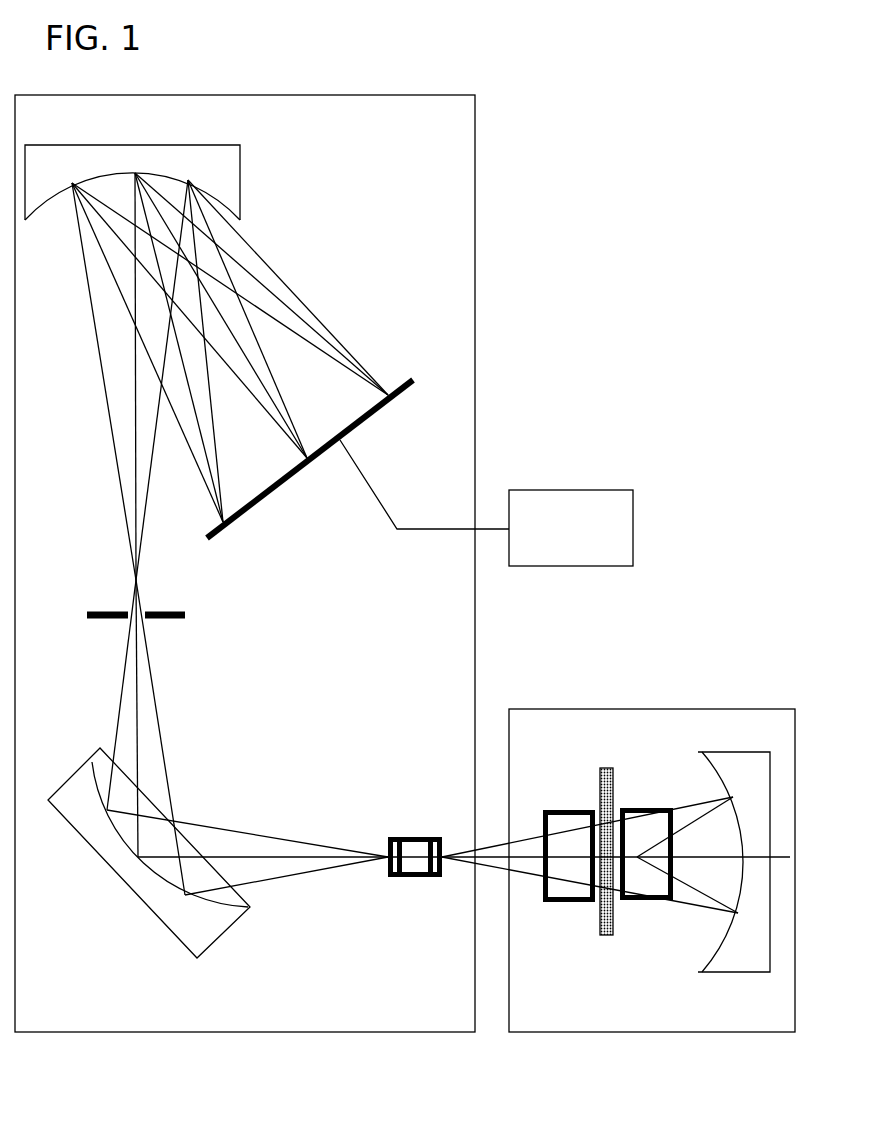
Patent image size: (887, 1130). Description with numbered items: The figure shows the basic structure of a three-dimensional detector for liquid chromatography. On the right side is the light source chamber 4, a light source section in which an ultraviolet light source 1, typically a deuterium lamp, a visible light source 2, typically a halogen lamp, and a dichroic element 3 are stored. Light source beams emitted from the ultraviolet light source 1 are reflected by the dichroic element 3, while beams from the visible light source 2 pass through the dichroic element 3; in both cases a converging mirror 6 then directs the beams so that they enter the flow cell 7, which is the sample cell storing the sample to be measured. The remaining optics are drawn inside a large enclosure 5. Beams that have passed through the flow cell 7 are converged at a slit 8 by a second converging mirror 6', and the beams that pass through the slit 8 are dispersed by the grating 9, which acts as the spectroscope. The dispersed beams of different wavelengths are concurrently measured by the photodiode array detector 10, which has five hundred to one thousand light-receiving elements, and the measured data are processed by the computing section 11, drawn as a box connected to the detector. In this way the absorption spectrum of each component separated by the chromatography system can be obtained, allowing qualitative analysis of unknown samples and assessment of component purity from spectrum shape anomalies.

The ultraviolet light source 1 is at (635, 808).
The visible light source 2 is at (560, 808).
The dichroic element 3 is at (605, 937).
The light source chamber 4 is at (693, 712).
The spectrometer housing 5 is at (417, 1032).
The converging mirror 6 is at (734, 888).
The converging mirror 6' is at (149, 855).
The flow cell 7 is at (415, 835).
The slit 8 is at (103, 612).
The grating 9 is at (173, 147).
The photodiode array detector 10 is at (378, 408).
The computing section 11 is at (588, 490).